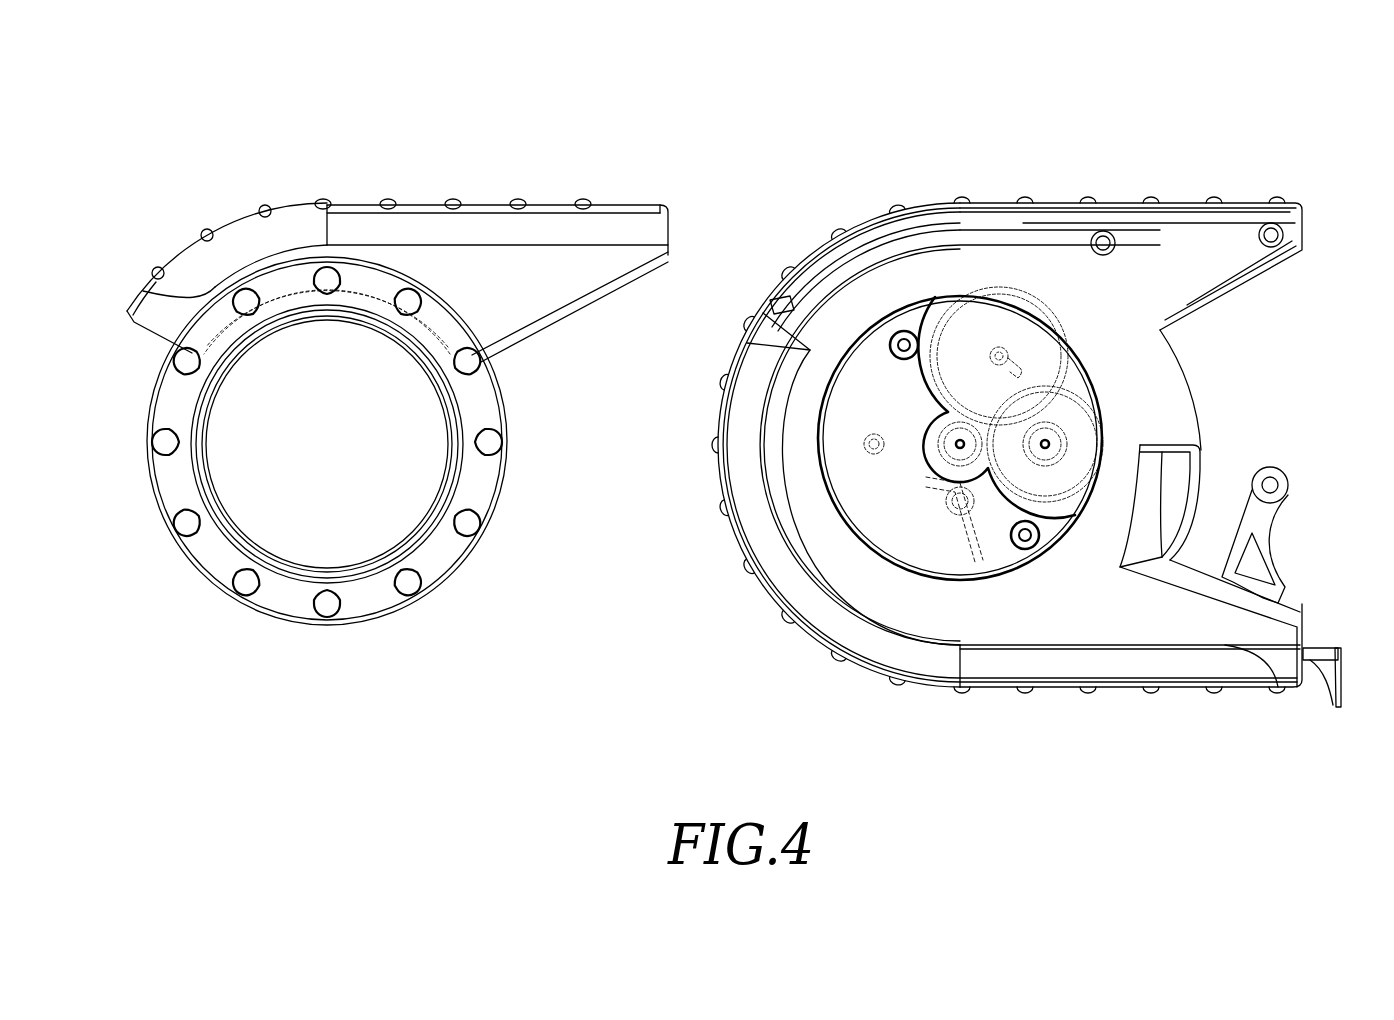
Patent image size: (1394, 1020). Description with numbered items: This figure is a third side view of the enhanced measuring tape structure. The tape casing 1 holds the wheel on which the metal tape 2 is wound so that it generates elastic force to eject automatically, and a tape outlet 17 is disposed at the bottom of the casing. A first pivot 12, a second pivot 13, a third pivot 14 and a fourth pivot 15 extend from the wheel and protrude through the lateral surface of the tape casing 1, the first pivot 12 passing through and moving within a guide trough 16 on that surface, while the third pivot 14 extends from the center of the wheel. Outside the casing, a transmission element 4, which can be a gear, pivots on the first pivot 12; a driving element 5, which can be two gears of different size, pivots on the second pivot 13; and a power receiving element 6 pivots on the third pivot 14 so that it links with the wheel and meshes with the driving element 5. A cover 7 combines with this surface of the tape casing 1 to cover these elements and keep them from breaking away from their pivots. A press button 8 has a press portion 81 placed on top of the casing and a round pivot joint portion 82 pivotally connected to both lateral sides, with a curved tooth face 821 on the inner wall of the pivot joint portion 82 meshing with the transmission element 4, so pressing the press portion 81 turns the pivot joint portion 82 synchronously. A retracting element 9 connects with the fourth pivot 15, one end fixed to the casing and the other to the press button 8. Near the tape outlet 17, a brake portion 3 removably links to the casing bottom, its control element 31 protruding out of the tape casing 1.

The tape casing 1 is at (722, 584).
The metal tape 2 is at (1320, 648).
The brake portion 3 is at (1296, 560).
The transmission element 4 is at (968, 320).
The driving element 5 is at (1085, 452).
The power receiving element 6 is at (944, 444).
The cover 7 is at (817, 440).
The press button 8 is at (234, 212).
The retracting element 9 is at (987, 555).
The first pivot 12 is at (1002, 352).
The second pivot 13 is at (1072, 440).
The third pivot 14 is at (956, 443).
The fourth pivot 15 is at (952, 503).
The guide trough 16 is at (1023, 362).
The tape outlet 17 is at (1338, 700).
The control element 31 is at (1272, 476).
The press portion 81 is at (648, 232).
The pivot joint portion 82 is at (480, 410).
The curved tooth face 821 is at (440, 308).